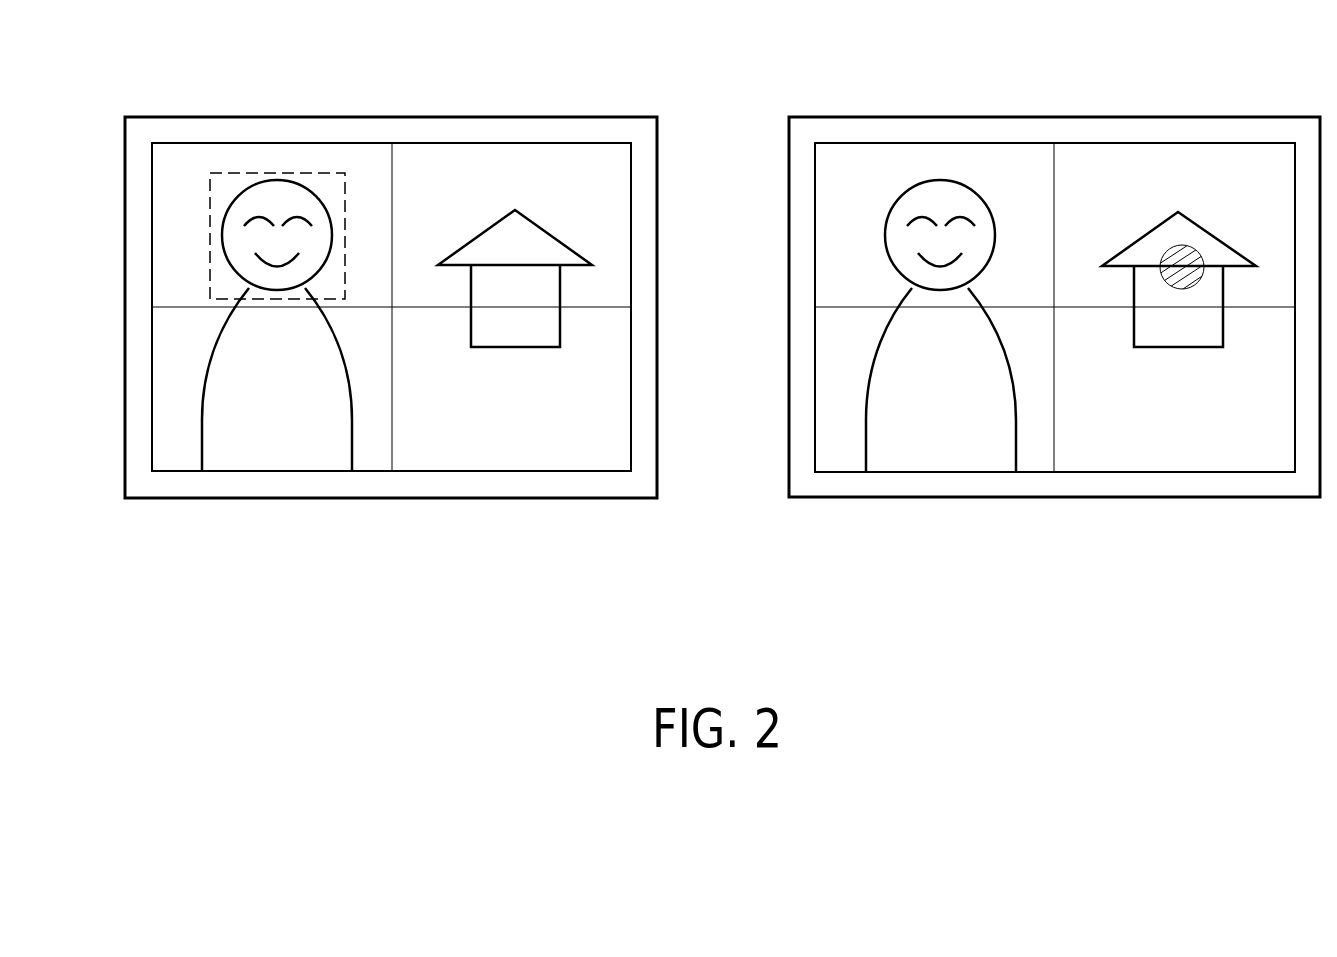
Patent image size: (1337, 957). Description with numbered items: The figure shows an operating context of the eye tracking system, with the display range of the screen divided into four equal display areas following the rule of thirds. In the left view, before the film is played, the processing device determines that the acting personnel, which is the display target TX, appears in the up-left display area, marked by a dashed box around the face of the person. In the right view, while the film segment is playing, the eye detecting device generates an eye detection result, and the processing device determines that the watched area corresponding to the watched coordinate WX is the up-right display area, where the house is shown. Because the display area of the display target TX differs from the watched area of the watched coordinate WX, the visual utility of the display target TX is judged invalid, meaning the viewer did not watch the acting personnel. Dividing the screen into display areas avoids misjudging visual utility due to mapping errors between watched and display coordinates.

The display target TX is at (280, 169).
The watched coordinate WX is at (1197, 245).